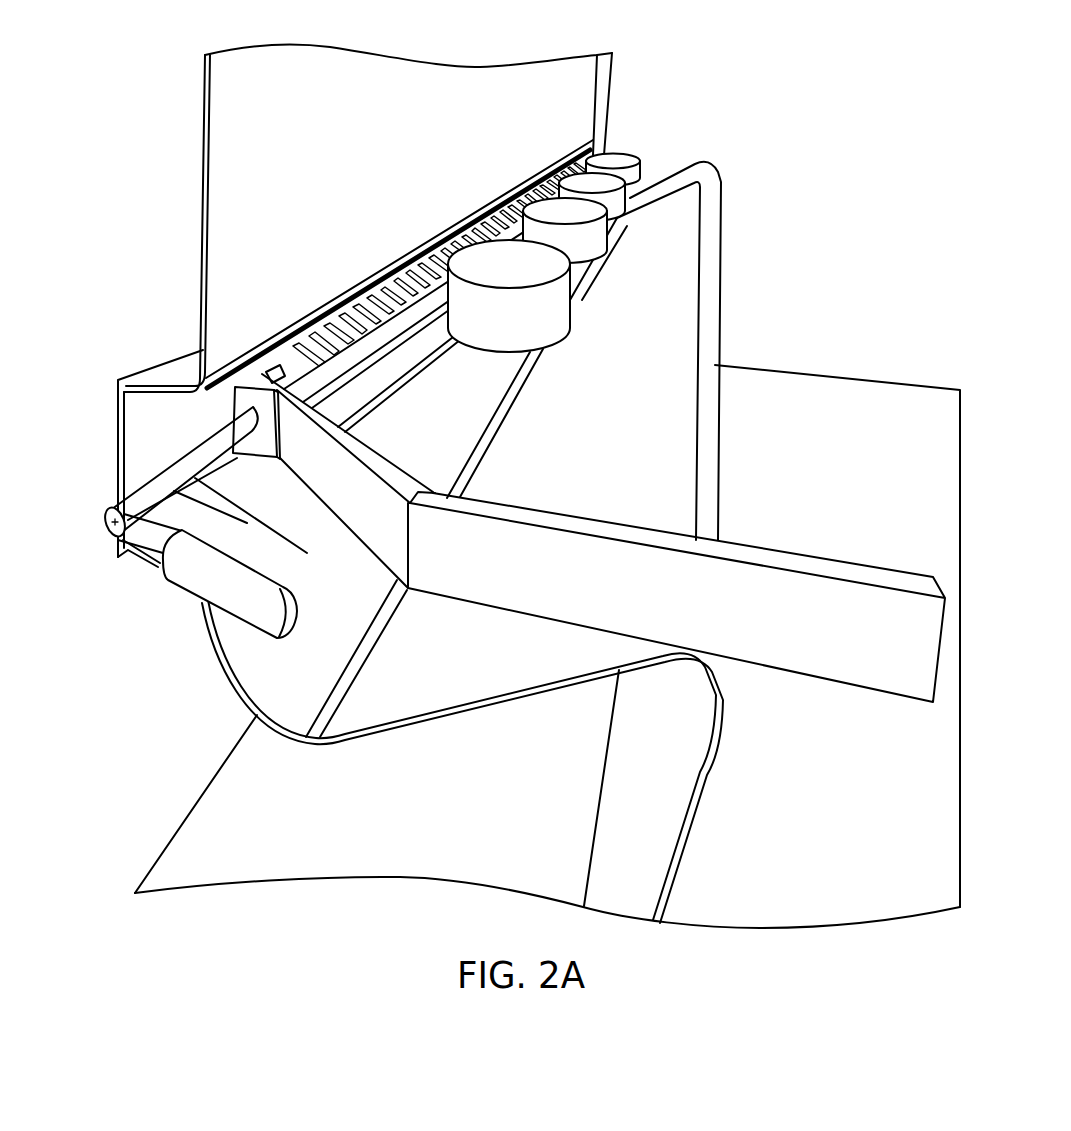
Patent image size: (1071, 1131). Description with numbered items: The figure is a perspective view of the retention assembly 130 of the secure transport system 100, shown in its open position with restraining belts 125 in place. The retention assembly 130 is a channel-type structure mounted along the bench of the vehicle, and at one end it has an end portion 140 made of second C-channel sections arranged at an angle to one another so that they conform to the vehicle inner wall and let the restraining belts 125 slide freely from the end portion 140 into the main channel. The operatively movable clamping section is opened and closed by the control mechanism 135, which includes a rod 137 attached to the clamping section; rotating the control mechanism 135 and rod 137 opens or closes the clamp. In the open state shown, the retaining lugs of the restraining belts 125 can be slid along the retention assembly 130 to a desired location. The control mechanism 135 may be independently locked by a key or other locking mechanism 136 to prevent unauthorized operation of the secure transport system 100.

The secure transport system 100 is at (818, 108).
The restraining belts 125 is at (633, 187).
The retention assembly 130 is at (347, 310).
The control mechanism 135 is at (203, 583).
The locking mechanism 136 is at (108, 515).
The rod 137 is at (160, 487).
The end portion 140 is at (677, 608).